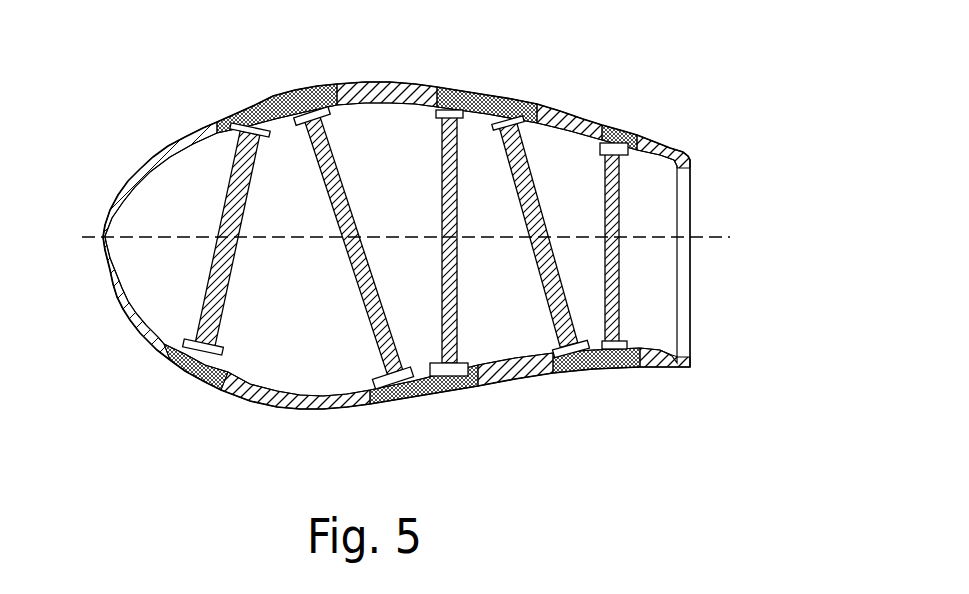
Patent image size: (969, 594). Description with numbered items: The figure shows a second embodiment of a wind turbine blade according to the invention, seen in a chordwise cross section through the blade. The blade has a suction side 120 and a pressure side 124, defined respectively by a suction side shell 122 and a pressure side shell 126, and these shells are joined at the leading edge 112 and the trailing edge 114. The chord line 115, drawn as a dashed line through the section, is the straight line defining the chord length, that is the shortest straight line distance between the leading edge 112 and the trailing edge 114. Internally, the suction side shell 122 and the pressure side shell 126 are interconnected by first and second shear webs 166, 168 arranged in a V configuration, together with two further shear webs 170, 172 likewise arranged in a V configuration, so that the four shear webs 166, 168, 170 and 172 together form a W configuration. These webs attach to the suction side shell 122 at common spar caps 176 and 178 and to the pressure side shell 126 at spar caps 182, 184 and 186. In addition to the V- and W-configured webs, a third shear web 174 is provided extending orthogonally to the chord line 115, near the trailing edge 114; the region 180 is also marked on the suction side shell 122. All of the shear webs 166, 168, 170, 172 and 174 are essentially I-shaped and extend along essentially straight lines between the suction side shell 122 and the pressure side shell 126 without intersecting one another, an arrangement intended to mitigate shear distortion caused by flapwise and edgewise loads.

The leading edge 112 is at (102, 253).
The trailing edge 114 is at (690, 223).
The chord line 115 is at (150, 237).
The suction side 120 is at (410, 66).
The suction side shell 122 is at (572, 110).
The pressure side 124 is at (327, 420).
The pressure side shell 126 is at (657, 370).
The first shear web 166 is at (230, 273).
The second shear web 168 is at (363, 247).
The further shear web 170 is at (455, 287).
The further shear web 172 is at (525, 168).
The third shear web 174 is at (623, 168).
The spar cap 176 is at (273, 90).
The spar cap 178 is at (493, 93).
The upper skin joint 180 is at (632, 127).
The spar cap 182 is at (190, 380).
The spar cap 184 is at (418, 398).
The spar cap 186 is at (592, 370).